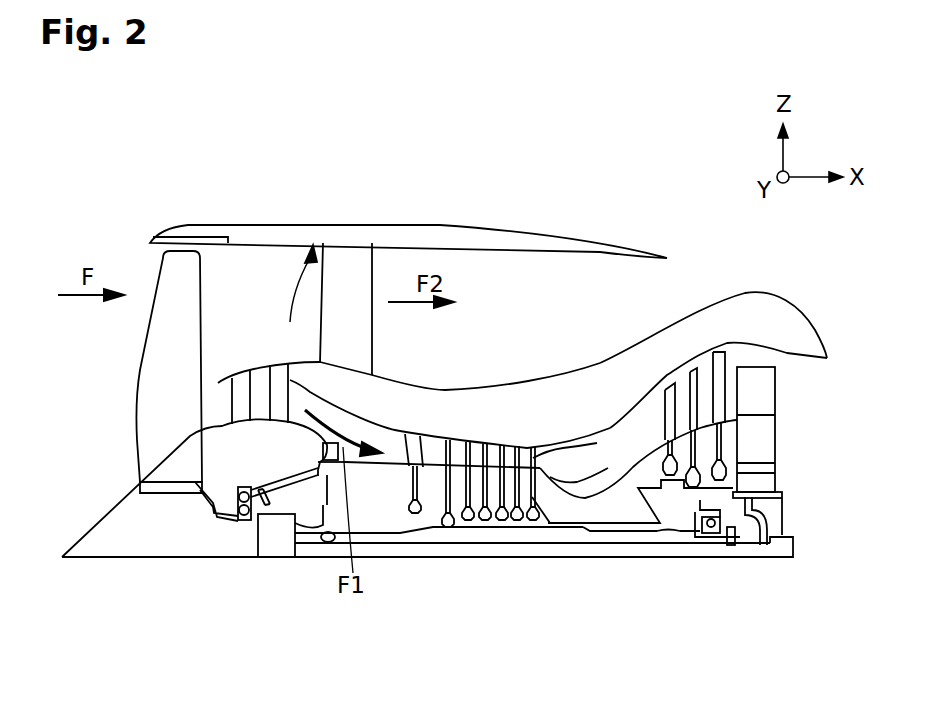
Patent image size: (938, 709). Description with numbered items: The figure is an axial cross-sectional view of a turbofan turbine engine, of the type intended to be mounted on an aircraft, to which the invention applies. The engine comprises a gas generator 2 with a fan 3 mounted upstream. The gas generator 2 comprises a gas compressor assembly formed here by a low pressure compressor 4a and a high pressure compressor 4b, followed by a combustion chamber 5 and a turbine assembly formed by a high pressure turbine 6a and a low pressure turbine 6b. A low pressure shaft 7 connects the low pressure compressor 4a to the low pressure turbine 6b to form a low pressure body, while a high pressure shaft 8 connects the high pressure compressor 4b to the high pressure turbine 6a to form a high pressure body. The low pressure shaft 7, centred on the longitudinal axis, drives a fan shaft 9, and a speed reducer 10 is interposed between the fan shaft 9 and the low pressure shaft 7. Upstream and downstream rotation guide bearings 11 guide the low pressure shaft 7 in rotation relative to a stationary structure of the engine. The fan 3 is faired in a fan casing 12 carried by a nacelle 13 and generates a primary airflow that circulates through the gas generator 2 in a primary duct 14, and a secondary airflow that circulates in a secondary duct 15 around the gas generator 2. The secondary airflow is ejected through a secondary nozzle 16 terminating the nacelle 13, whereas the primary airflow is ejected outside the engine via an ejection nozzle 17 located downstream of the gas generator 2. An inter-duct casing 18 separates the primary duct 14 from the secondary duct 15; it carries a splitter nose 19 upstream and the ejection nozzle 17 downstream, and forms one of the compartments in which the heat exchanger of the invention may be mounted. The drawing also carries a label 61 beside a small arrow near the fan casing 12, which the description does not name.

The gas generator 2 is at (514, 574).
The fan 3 is at (120, 348).
The low pressure compressor 4a is at (250, 450).
The high pressure compressor 4b is at (458, 510).
The combustion chamber 5 is at (573, 472).
The high pressure turbine 6a is at (707, 462).
The low pressure turbine 6b is at (740, 383).
The low pressure shaft 7 is at (389, 540).
The high pressure shaft 8 is at (626, 533).
The fan shaft 9 is at (237, 518).
The speed reducer 10 is at (272, 537).
The rotation guide bearings 11 is at (208, 503).
The fan casing 12 is at (200, 237).
The nacelle 13 is at (322, 243).
The primary duct 14 is at (343, 415).
The secondary duct 15 is at (284, 288).
The secondary nozzle 16 is at (614, 250).
The ejection nozzle 17 is at (808, 330).
The inter-duct casing 18 is at (463, 412).
The splitter nose 19 is at (218, 383).
The air passage 61 is at (294, 298).